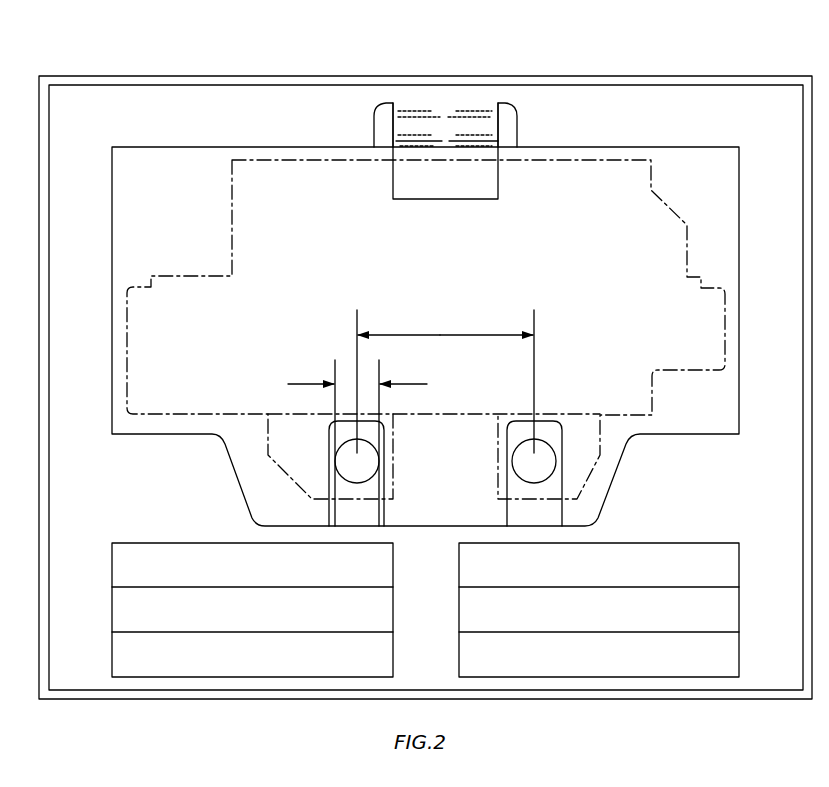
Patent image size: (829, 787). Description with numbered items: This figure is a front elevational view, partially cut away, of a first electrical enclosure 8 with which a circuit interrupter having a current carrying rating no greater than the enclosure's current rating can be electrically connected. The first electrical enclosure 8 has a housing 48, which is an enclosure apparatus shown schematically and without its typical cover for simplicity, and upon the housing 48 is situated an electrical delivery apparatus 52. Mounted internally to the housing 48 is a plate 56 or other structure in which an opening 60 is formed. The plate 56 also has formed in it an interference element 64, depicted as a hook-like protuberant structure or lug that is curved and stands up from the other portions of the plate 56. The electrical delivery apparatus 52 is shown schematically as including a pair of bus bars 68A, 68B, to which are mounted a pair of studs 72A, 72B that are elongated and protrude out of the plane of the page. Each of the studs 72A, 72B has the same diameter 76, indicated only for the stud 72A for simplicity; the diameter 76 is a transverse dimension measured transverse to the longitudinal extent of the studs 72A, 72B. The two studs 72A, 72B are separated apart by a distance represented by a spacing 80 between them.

The first electrical enclosure 8 is at (484, 4).
The housing 48 is at (158, 76).
The plate 56 is at (678, 103).
The opening 60 is at (739, 188).
The interference element 64 is at (420, 199).
The electrical delivery apparatus 52 is at (550, 404).
The bus bar 68A is at (330, 447).
The bus bar 68B is at (562, 425).
The stud 72A is at (376, 476).
The stud 72B is at (556, 464).
The spacing 80 is at (437, 335).
The diameter 76 is at (302, 384).